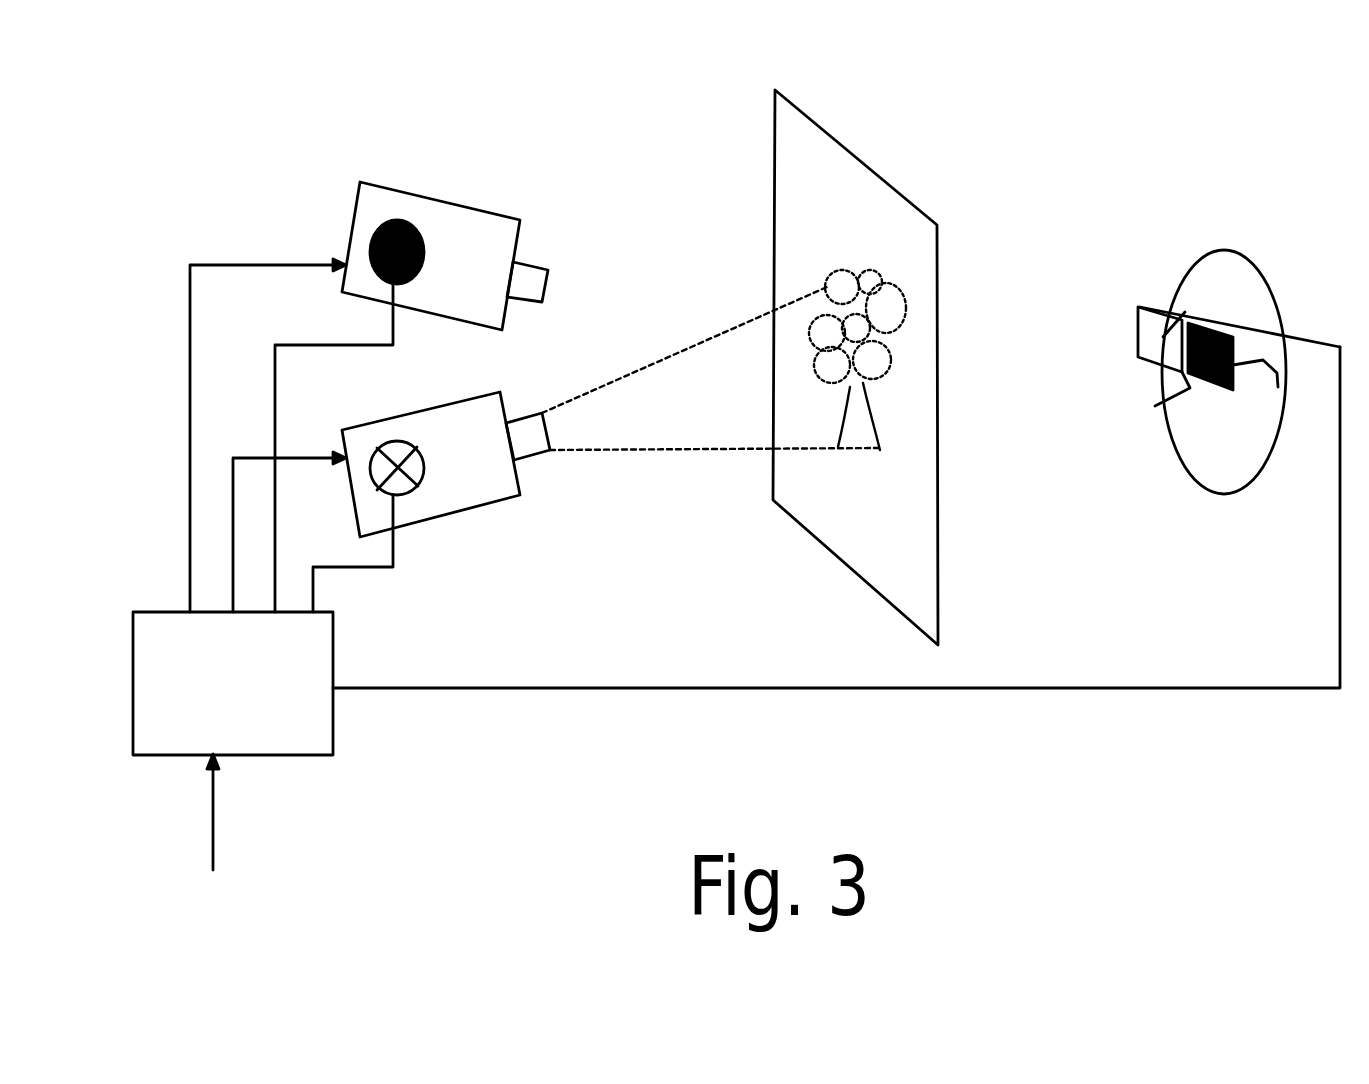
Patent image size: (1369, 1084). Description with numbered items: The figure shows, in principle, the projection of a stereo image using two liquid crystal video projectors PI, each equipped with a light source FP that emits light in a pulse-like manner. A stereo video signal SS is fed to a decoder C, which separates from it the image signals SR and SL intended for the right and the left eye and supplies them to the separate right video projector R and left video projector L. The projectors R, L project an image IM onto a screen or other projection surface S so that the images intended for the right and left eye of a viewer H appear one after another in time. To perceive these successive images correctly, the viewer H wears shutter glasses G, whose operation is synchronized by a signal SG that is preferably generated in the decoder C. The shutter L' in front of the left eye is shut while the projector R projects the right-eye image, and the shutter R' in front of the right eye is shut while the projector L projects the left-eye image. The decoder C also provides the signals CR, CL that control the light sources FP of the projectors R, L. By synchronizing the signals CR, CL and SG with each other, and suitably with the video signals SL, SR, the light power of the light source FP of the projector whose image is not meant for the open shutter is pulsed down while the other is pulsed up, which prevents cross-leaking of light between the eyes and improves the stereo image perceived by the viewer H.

The liquid crystal video projectors PI is at (449, 360).
The left video projector L is at (445, 256).
The right video projector R is at (446, 464).
The light source FP is at (383, 222).
The left image signal SL is at (193, 335).
The right image signal SR is at (237, 500).
The left light source control signal CL is at (347, 345).
The right light source control signal CR is at (393, 552).
The decoder C is at (233, 683).
The stereo video signal SS is at (215, 807).
The shutter glasses synchronization signal SG is at (433, 690).
The screen S is at (855, 367).
The image IM is at (724, 360).
The viewer H is at (1220, 435).
The shutter glasses G is at (1243, 298).
The right eye shutter R' is at (1203, 281).
The left eye shutter L' is at (1255, 299).